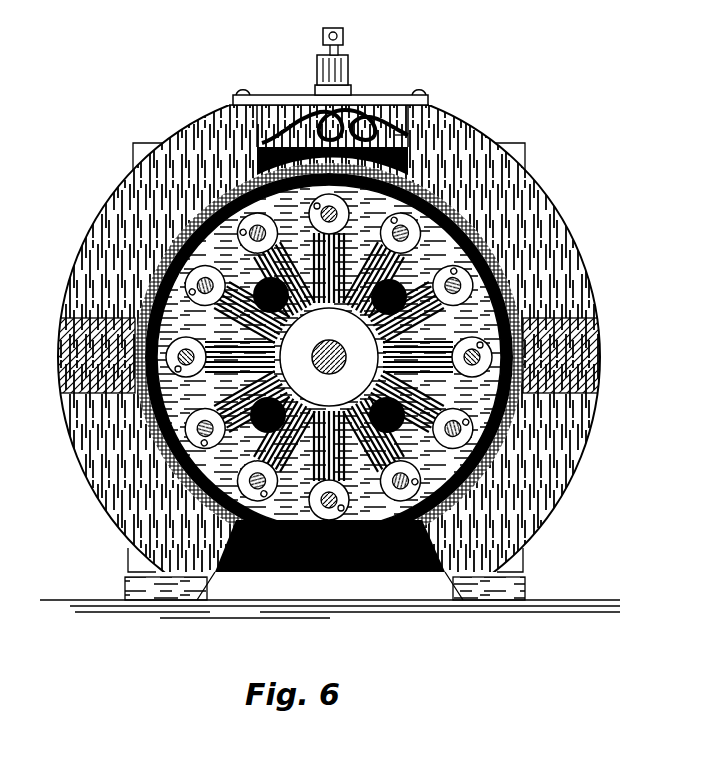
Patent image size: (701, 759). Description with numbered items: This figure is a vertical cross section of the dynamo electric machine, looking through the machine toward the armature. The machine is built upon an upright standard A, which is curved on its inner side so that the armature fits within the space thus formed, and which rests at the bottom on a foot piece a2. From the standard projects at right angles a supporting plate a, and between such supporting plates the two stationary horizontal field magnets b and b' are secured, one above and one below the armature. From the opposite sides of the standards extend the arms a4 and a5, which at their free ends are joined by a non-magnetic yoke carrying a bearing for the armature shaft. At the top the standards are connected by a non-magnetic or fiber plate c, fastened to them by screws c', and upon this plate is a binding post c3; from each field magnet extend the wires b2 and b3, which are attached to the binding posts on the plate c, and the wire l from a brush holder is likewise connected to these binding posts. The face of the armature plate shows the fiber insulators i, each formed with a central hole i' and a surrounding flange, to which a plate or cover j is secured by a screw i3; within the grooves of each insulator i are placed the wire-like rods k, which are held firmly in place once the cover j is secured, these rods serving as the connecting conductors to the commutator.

The standard A is at (329, 357).
The supporting plate a is at (329, 357).
The foot piece a2 is at (524, 578).
The arm a4 is at (583, 361).
The arm a5 is at (62, 360).
The field magnet b is at (332, 140).
The field magnet b' is at (330, 562).
The wire b2 is at (400, 122).
The wire b3 is at (270, 127).
The non-magnetic or fiber plate c is at (330, 86).
The screw c' is at (343, 80).
The binding post c3 is at (348, 76).
The insulator i is at (329, 317).
The central hole i' is at (325, 266).
The screw i3 is at (322, 212).
The plate or cover j is at (440, 378).
The wire-like rod k is at (318, 248).
The wire l is at (329, 357).